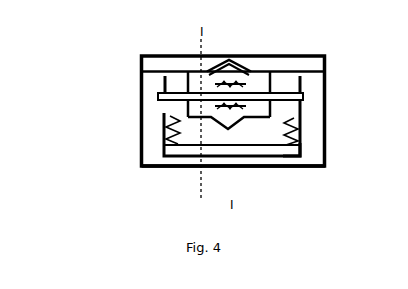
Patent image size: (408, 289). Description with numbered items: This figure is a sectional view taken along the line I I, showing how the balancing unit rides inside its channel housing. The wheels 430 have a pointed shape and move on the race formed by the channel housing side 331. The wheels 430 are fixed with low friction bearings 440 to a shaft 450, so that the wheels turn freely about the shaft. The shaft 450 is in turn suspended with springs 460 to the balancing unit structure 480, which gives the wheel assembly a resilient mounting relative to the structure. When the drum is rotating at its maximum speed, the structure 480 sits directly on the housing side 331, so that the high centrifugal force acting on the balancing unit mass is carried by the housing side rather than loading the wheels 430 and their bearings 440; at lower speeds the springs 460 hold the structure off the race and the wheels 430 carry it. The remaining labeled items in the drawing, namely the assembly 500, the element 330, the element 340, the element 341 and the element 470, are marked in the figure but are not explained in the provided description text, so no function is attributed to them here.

The electronic device assembly 500 is at (104, 68).
The housing 330 is at (299, 50).
The channel housing side 331 is at (312, 68).
The housing bottom wall 340 is at (302, 171).
The inner bottom corner 341 is at (309, 160).
The wheels 430 is at (186, 90).
The low friction bearings 440 is at (238, 80).
The shaft 450 is at (155, 94).
The springs 460 is at (158, 124).
The spring 470 is at (160, 116).
The balancing unit structure 480 is at (255, 146).